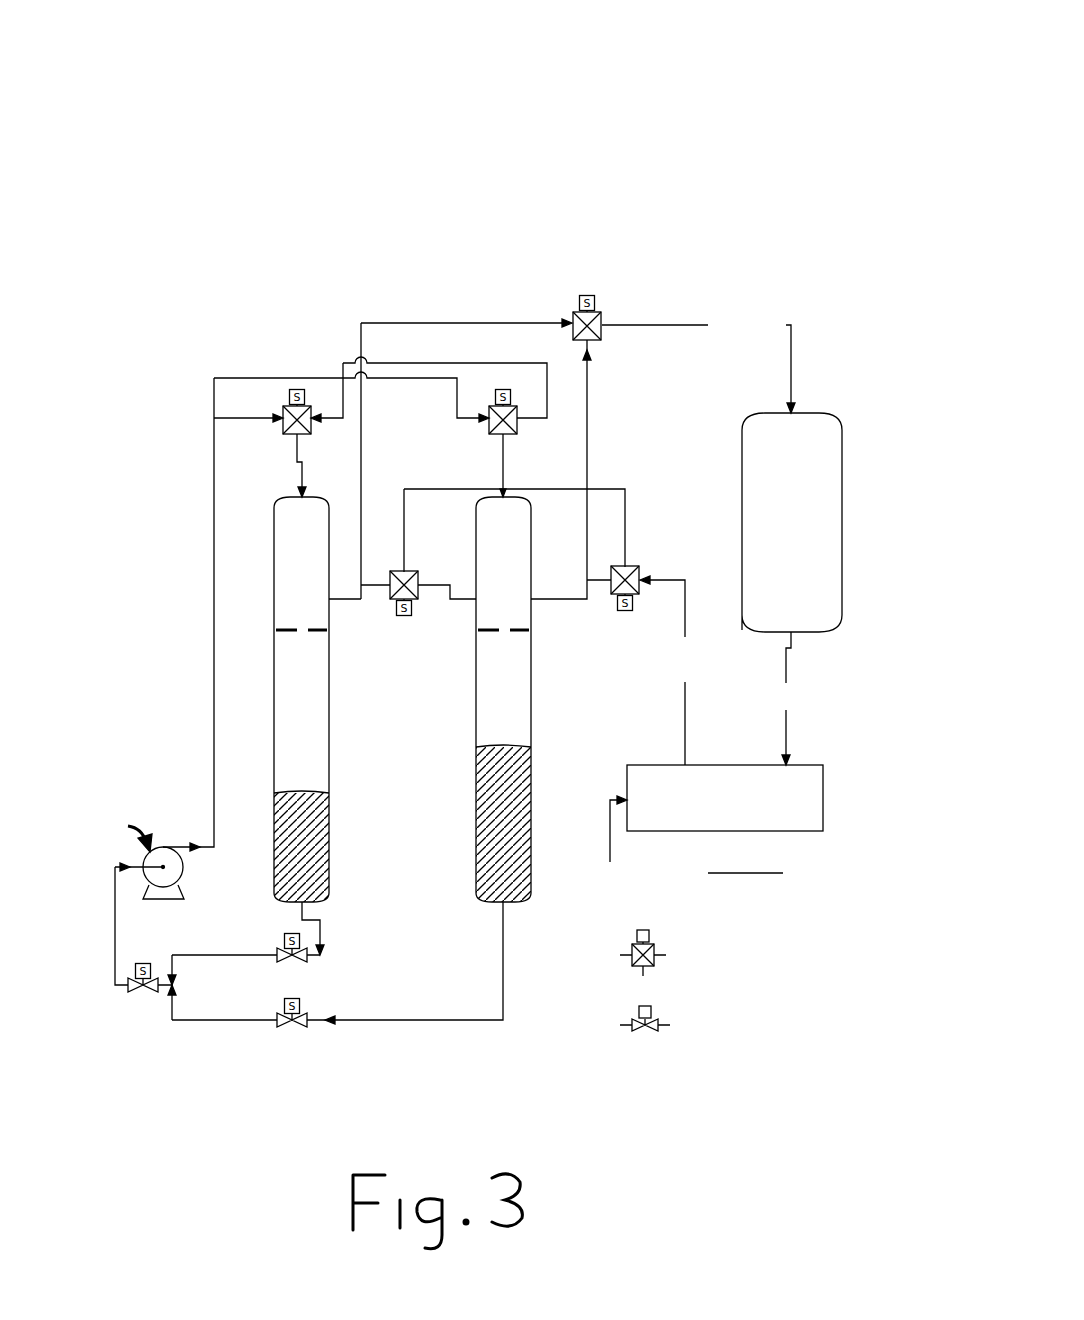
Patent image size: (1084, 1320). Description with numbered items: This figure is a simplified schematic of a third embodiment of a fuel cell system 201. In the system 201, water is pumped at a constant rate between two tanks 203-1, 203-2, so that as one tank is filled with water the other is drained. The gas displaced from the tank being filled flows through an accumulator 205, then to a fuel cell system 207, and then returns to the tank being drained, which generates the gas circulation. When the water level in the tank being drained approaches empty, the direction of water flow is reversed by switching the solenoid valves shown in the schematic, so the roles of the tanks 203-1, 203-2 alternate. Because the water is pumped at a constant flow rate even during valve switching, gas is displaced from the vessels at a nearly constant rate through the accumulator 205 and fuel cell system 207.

The fuel cell system 201 is at (514, 165).
The tank 203-1 is at (483, 686).
The tank 203-2 is at (323, 750).
The accumulator 205 is at (730, 470).
The fuel cell system 207 is at (797, 834).